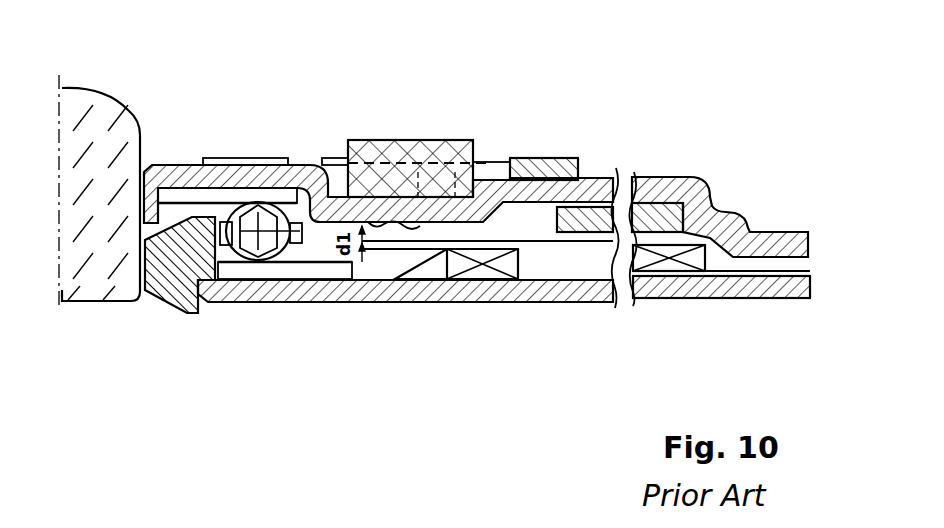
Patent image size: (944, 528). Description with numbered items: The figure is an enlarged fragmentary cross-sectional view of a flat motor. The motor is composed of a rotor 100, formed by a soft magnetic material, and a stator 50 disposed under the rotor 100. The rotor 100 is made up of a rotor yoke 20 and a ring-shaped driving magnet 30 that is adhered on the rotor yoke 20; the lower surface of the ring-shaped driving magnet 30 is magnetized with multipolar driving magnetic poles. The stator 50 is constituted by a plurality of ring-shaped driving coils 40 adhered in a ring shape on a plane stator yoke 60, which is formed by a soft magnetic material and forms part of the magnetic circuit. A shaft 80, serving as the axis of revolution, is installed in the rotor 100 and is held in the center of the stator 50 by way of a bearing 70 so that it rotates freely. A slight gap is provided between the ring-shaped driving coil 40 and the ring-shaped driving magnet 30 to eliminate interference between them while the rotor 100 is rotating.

The rotor yoke 20 is at (596, 178).
The ring-shaped driving magnet 30 is at (720, 183).
The ring-shaped driving coil 40 is at (488, 272).
The stator 50 is at (504, 314).
The stator yoke 60 is at (453, 343).
The bearing 70 is at (184, 312).
The shaft 80 is at (128, 114).
The rotor 100 is at (476, 161).